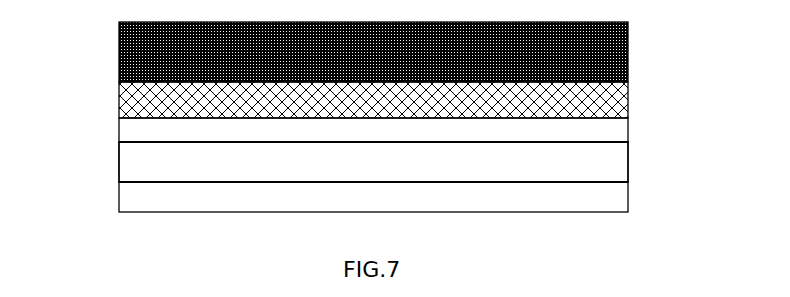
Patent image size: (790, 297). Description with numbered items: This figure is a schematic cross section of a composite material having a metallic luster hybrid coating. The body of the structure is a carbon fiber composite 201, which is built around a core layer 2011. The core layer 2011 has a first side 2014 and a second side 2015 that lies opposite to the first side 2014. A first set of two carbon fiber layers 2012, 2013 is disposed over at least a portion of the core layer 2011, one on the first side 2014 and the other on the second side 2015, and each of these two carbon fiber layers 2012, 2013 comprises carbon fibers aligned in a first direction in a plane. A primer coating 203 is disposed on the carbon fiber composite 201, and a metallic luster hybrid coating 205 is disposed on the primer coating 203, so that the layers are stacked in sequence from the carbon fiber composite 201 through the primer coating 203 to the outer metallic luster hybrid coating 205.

The metallic luster hybrid coating 205 is at (628, 58).
The primer coating 203 is at (628, 92).
The first carbon fiber layer 2012 is at (119, 130).
The first side 2014 is at (610, 141).
The carbon fiber composite 201 is at (628, 162).
The core layer 2011 is at (119, 165).
The second side 2015 is at (610, 183).
The second carbon fiber layer 2013 is at (119, 194).